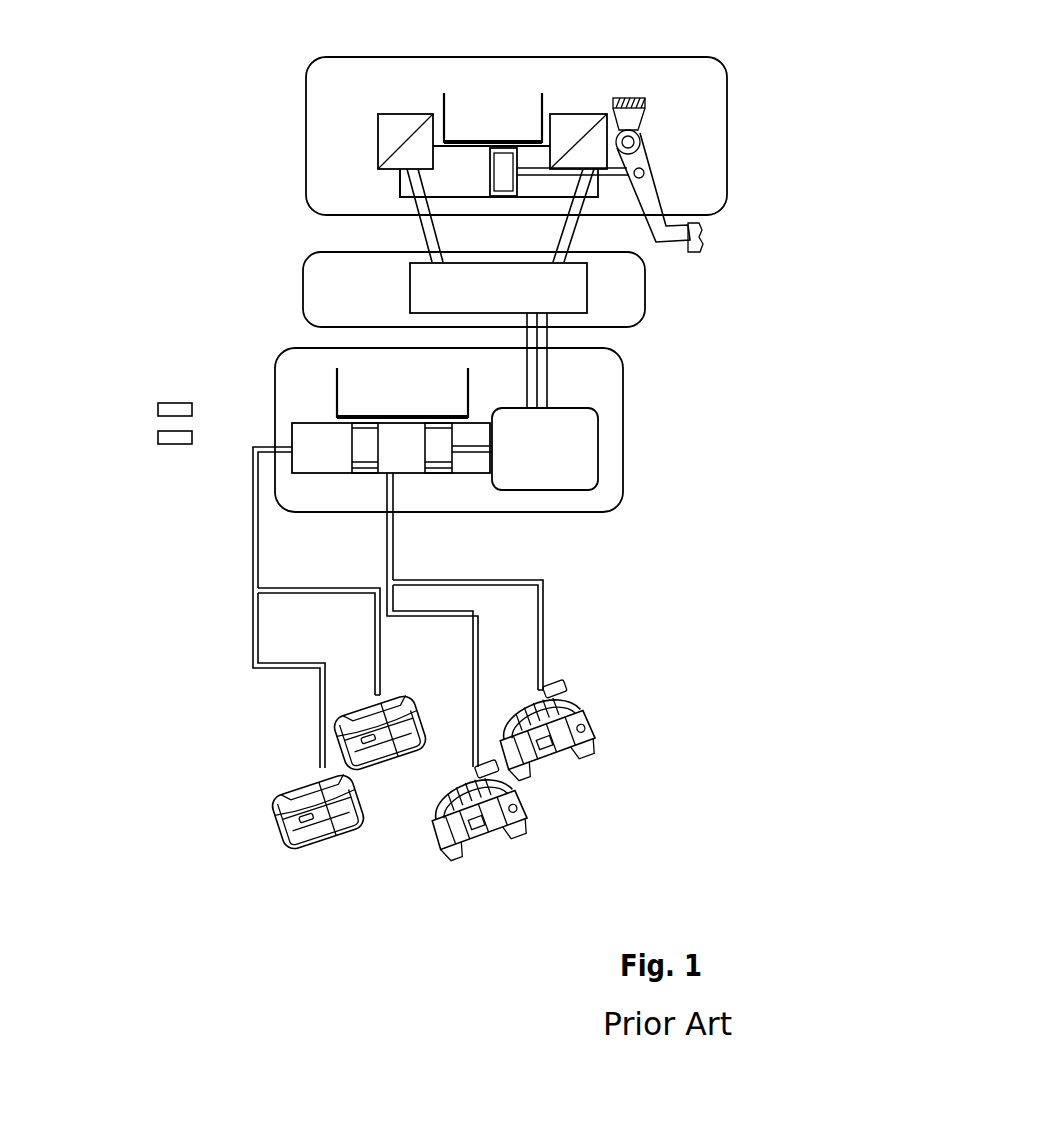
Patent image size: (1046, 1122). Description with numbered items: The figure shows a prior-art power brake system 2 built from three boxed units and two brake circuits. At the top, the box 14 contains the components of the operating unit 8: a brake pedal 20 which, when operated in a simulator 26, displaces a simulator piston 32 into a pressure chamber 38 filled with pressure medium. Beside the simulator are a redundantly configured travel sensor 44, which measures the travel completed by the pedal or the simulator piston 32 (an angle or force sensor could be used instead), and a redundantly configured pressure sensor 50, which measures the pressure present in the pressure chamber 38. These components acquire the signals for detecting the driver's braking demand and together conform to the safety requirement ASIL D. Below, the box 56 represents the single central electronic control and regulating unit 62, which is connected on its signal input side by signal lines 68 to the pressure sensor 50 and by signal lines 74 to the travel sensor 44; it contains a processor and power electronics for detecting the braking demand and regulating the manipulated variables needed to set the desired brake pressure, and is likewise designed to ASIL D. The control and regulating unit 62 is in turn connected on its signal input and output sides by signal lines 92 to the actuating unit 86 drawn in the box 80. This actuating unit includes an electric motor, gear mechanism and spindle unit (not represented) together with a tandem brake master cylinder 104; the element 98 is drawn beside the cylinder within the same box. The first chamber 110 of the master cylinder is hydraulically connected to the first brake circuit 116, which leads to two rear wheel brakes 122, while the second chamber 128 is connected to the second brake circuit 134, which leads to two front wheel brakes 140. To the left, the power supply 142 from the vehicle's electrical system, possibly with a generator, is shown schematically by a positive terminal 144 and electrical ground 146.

The power brake system 2 is at (268, 59).
The operating unit 8 is at (500, 84).
The box 14 is at (727, 97).
The brake pedal 20 is at (647, 187).
The simulator 26 is at (459, 198).
The simulator piston 32 is at (530, 197).
The pressure chamber 38 is at (430, 183).
The travel sensor 44 is at (577, 114).
The pressure sensor 50 is at (404, 114).
The box 56 is at (645, 293).
The electronic control and regulating unit 62 is at (412, 291).
The signal lines 68 is at (443, 226).
The signal lines 74 is at (565, 225).
The box 80 is at (623, 474).
The actuating unit 86 is at (483, 380).
The signal lines 92 is at (547, 392).
The pump 98 is at (593, 436).
The tandem brake master cylinder 104 is at (473, 476).
The first chamber 110 is at (412, 467).
The first brake circuit 116 is at (387, 555).
The rear wheel brakes 122 is at (560, 722).
The second chamber 128 is at (312, 432).
The second brake circuit 134 is at (253, 541).
The front wheel brakes 140 is at (410, 705).
The power supply 142 is at (176, 388).
The positive terminal 144 is at (158, 408).
The electrical ground 146 is at (158, 437).